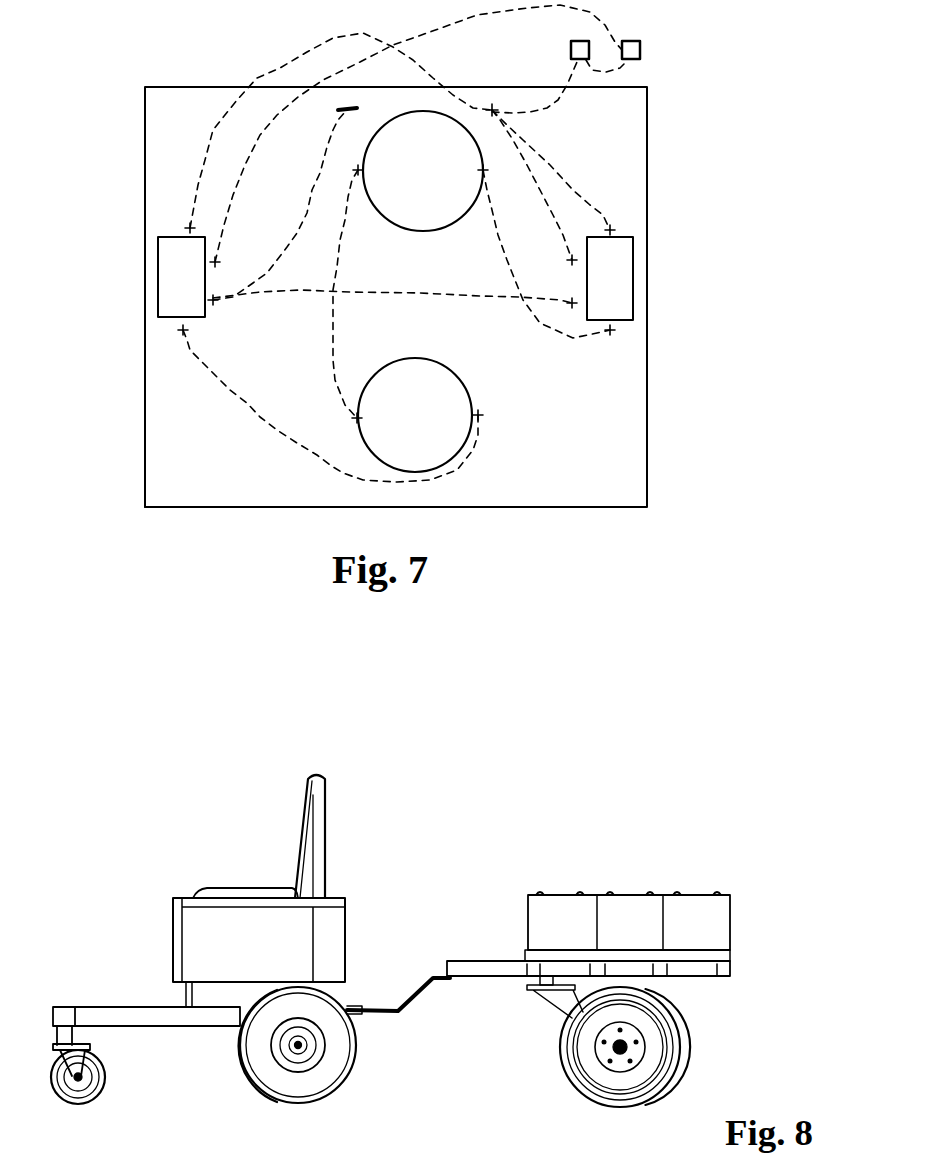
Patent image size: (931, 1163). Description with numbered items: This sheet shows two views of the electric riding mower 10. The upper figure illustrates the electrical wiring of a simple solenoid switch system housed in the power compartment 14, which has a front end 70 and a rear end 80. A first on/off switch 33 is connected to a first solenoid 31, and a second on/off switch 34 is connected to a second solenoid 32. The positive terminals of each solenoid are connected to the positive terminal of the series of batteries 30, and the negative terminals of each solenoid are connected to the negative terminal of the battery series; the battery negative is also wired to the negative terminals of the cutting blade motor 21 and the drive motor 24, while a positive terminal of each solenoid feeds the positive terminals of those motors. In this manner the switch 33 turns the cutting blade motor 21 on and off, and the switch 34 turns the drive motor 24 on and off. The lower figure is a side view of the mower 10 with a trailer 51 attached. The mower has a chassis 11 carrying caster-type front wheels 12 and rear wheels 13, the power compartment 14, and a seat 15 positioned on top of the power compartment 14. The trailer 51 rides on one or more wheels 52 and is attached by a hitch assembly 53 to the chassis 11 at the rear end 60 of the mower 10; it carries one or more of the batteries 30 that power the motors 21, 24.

In FIG. 8, the riding mower 10 is at (148, 882).
In FIG. 8, the chassis 11 is at (133, 1007).
In FIG. 8, the front wheels 12 is at (108, 1080).
In FIG. 8, the rear wheels 13 is at (352, 1082).
In FIG. 7, the power compartment 14 is at (590, 507).
In FIG. 8, the power compartment 14 is at (260, 960).
In FIG. 8, the seat 15 is at (326, 822).
In FIG. 7, the cutting blade motor 21 is at (437, 431).
In FIG. 7, the drive motor 24 is at (442, 195).
In FIG. 8, the batteries 30 is at (710, 930).
In FIG. 7, the first solenoid 31 is at (197, 292).
In FIG. 7, the second solenoid 32 is at (625, 290).
In FIG. 7, the first on/off switch 33 is at (640, 48).
In FIG. 7, the second on/off switch 34 is at (571, 50).
In FIG. 8, the trailer 51 is at (507, 928).
In FIG. 8, the wheels 52 is at (690, 1050).
In FIG. 8, the hitch assembly 53 is at (432, 985).
In FIG. 7, the rear end 60 is at (231, 543).
In FIG. 8, the rear end 60 is at (368, 957).
In FIG. 7, the front end 70 is at (193, 88).
In FIG. 7, the rear end 80 is at (228, 507).